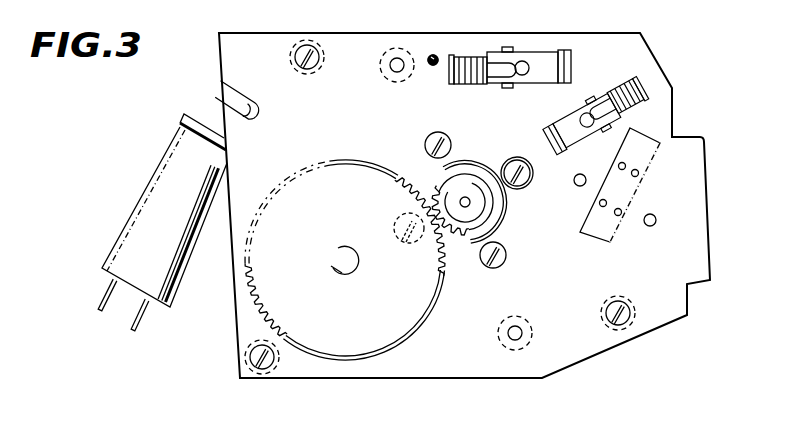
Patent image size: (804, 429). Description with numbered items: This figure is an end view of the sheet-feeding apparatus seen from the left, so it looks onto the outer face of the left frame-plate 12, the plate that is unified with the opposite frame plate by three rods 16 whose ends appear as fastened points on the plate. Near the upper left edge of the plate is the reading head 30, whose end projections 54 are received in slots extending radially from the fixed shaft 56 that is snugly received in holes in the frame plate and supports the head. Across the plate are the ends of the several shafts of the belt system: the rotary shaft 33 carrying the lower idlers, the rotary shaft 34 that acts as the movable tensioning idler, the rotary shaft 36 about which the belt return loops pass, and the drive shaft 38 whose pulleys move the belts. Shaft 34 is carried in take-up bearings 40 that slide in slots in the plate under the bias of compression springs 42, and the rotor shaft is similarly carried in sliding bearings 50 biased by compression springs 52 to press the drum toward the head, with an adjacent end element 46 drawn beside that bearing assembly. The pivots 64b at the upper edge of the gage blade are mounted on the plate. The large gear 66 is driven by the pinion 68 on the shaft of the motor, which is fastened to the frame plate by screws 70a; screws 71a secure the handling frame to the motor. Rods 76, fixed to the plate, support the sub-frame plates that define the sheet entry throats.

The left frame-plate 12 is at (344, 48).
The rods 16 is at (329, 38).
The reading head 30 is at (194, 112).
The rotary shaft 33 is at (528, 322).
The rotary shaft 34 is at (543, 56).
The rotary shaft 36 is at (406, 48).
The drive shaft 38 is at (340, 272).
The take-up bearings 40 is at (541, 66).
The compression springs 42 is at (464, 55).
The second solenoid end plate 46 is at (568, 125).
The sliding bearings 50 is at (594, 100).
The compression springs 52 is at (644, 88).
The projections 54 is at (244, 100).
The fixed shaft 56 is at (346, 158).
The pivots 64b is at (431, 66).
The large gear 66 is at (365, 178).
The pinion 68 is at (473, 176).
The screws 70a is at (435, 133).
The screws 71a is at (520, 186).
The rods 76 is at (586, 181).